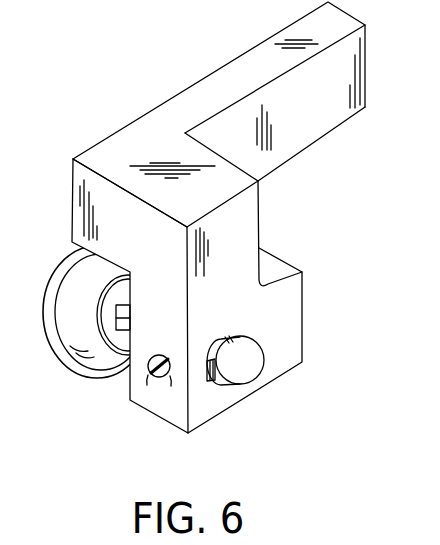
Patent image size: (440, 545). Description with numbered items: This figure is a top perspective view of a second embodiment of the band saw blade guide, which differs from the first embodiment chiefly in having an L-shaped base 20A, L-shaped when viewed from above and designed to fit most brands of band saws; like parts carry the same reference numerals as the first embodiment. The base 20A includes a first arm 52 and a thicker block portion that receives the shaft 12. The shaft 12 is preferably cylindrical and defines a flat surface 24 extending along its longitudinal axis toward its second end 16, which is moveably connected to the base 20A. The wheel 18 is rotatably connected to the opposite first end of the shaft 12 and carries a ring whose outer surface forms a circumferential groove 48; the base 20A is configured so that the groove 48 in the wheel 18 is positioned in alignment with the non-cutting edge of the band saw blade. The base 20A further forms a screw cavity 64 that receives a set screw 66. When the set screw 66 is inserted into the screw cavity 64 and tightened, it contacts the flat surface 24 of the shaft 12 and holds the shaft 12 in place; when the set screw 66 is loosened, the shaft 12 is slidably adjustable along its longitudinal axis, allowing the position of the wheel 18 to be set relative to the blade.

The shaft 12 is at (268, 345).
The second end of the shaft 16 is at (244, 374).
The wheel 18 is at (99, 390).
The base 20A is at (305, 128).
The flat surface 24 is at (130, 298).
The groove 48 is at (58, 322).
The first arm 52 is at (363, 71).
The screw cavity 64 is at (169, 379).
The set screw 66 is at (146, 373).